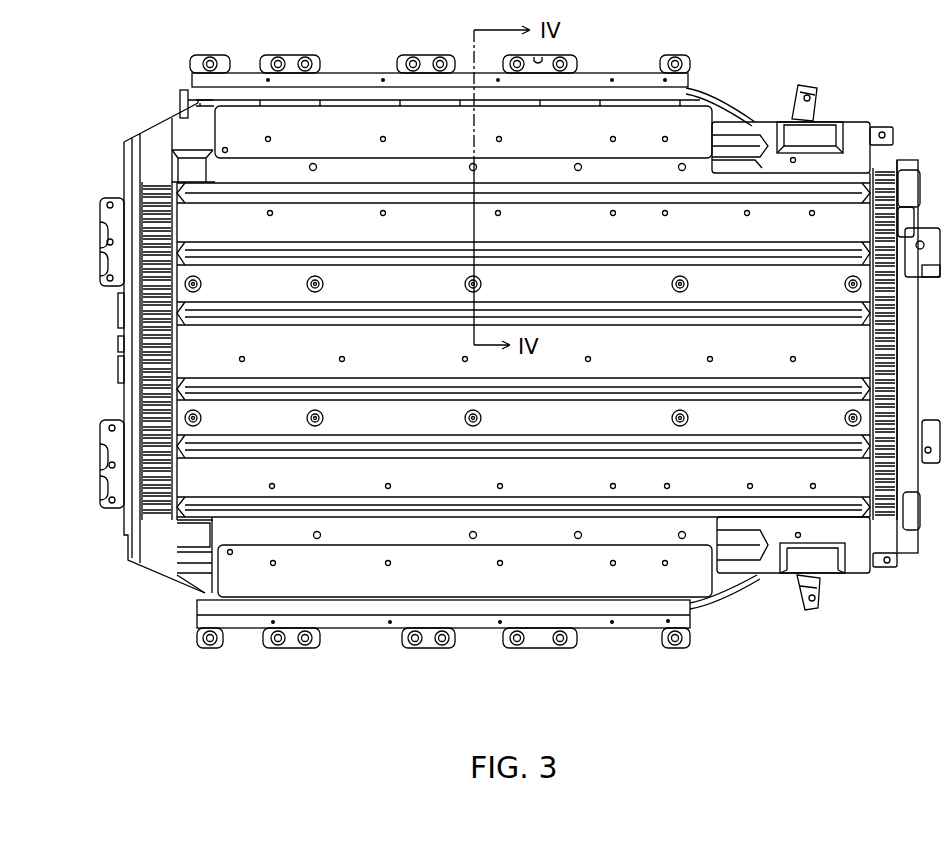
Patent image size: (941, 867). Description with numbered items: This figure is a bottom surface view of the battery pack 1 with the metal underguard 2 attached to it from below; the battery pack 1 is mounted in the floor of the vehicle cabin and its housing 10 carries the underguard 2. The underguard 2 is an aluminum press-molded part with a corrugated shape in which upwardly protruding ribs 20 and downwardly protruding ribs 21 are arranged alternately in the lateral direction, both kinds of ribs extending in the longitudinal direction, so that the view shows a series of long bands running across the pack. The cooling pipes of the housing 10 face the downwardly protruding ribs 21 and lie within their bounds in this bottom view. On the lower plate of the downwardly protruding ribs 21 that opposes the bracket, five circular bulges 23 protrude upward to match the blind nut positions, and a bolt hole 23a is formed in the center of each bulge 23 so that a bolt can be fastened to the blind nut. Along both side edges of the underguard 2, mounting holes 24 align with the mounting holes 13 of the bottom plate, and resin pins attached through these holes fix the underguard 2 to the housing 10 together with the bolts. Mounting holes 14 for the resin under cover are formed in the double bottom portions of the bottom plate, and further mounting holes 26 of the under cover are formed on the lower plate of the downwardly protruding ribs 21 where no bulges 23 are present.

The battery pack 1 is at (520, 374).
The underguard 2 is at (853, 128).
The housing 10 is at (731, 618).
The mounting holes 13 is at (498, 350).
The mounting holes 14 is at (502, 139).
The upwardly protruding ribs 20 is at (788, 250).
The downwardly protruding ribs 21 is at (746, 359).
The bulges 23 is at (464, 284).
The bolt hole 23a is at (482, 284).
The mounting holes 24 is at (472, 164).
The mounting holes 26 is at (386, 215).